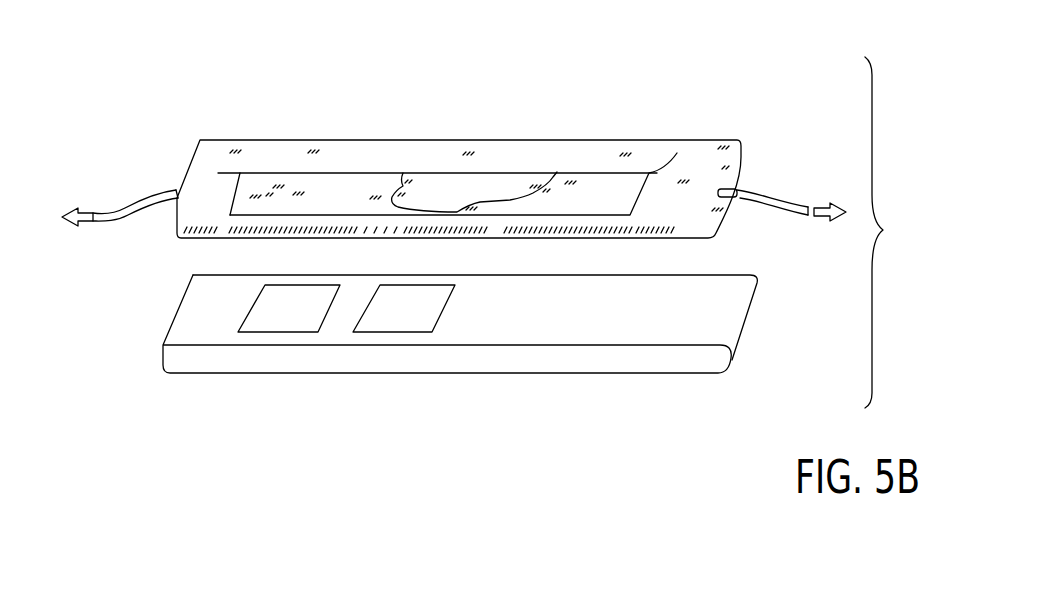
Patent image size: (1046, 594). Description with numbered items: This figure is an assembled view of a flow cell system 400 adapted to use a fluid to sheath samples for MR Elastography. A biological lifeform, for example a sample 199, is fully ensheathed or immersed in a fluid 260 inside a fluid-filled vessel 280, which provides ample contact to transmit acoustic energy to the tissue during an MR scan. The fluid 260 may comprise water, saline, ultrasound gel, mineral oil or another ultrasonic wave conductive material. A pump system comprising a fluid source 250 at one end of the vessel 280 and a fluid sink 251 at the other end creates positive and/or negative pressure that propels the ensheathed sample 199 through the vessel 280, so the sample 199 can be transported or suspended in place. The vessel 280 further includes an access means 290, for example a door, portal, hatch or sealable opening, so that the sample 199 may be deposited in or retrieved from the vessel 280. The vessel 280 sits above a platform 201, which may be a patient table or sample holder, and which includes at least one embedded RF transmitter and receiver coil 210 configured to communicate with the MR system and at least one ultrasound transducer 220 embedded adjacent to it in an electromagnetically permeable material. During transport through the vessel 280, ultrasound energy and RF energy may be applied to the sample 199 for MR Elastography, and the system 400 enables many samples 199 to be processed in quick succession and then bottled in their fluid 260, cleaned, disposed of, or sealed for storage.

The sample 199 is at (445, 197).
The platform 201 is at (153, 405).
The RF transmitter and receiver coil 210 is at (273, 321).
The ultrasound transducer 220 is at (389, 321).
The fluid source 250 is at (87, 209).
The fluid sink 251 is at (836, 207).
The fluid 260 is at (277, 198).
The vessel 280 is at (630, 140).
The access means 290 is at (256, 167).
The system 400 is at (901, 232).